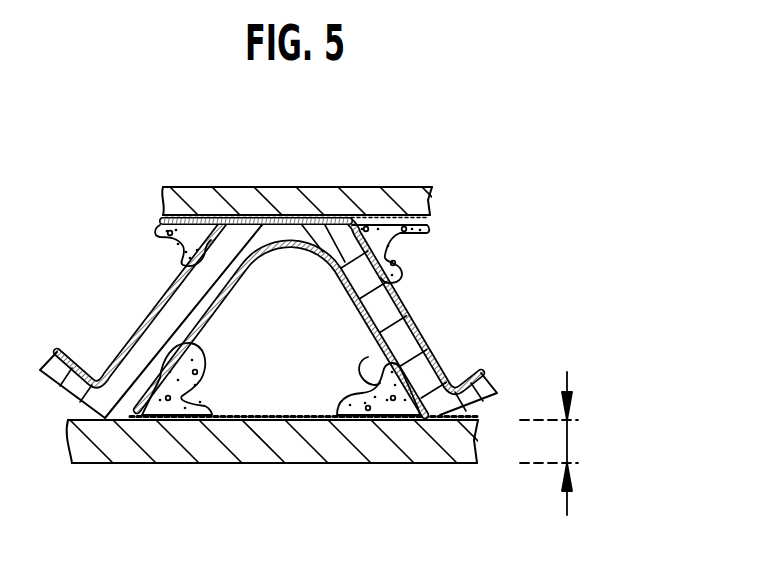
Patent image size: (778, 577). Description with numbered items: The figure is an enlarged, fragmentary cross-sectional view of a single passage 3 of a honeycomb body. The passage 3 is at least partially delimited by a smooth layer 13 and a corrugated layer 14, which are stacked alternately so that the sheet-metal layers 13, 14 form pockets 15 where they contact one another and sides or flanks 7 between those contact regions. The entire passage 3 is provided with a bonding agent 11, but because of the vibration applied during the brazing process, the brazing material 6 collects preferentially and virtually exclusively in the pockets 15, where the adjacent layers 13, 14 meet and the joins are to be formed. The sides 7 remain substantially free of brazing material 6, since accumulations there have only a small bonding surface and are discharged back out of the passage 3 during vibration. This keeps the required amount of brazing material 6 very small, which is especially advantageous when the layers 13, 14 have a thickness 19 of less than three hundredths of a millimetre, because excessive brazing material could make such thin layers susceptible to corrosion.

The passage 3 is at (257, 378).
The brazing material 6 is at (396, 268).
The side or flank 7 is at (408, 327).
The bonding agent 11 is at (290, 421).
The smooth layer 13 is at (401, 207).
The corrugated layer 14 is at (288, 238).
The pocket 15 is at (192, 345).
The thickness 19 is at (567, 439).